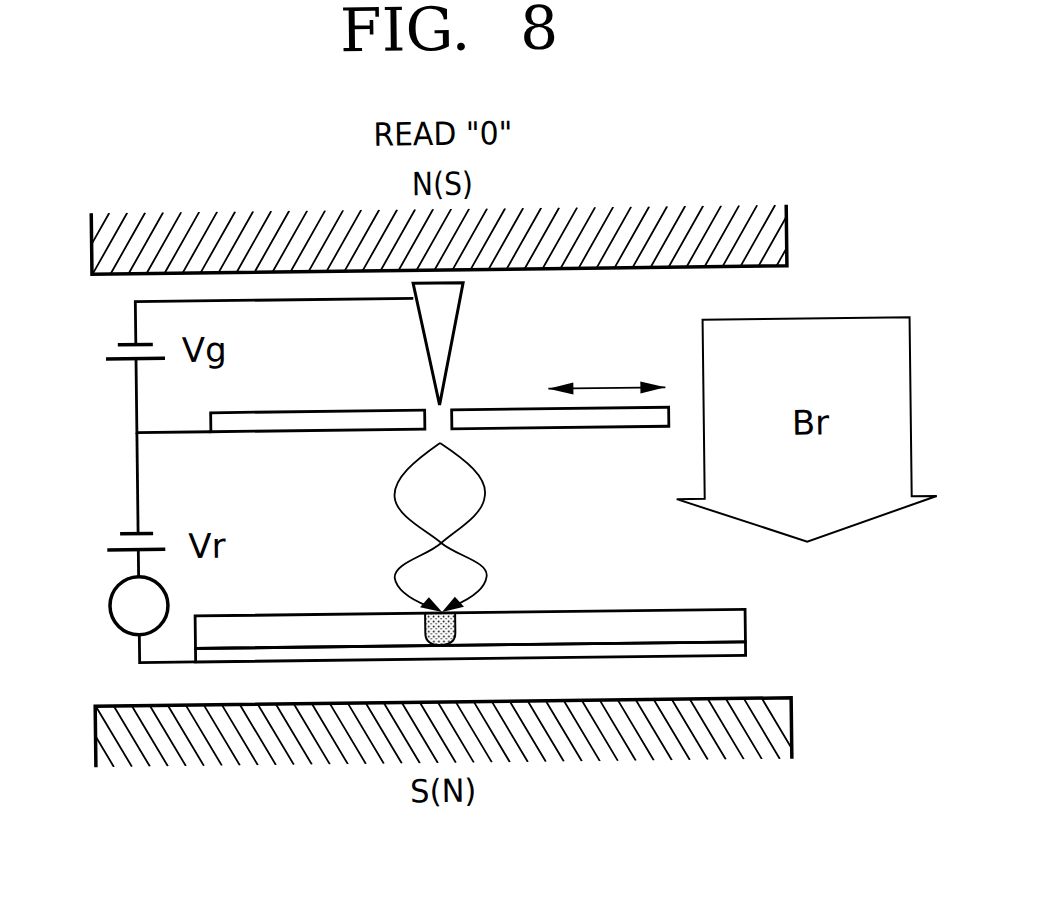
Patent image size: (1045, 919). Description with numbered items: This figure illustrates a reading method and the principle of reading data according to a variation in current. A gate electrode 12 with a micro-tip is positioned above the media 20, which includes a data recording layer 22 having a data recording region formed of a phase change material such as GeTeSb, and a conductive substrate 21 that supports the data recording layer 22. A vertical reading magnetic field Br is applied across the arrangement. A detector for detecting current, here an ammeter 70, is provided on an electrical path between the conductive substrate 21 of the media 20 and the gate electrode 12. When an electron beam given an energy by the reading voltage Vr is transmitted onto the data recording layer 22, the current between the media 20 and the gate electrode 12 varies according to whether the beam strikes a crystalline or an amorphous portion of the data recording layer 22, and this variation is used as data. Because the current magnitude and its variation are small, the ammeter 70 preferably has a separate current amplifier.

The gate electrode 12 is at (311, 410).
The media 20 is at (554, 630).
The substrate 21 is at (743, 653).
The data recording layer 22 is at (743, 625).
The ammeter 70 is at (108, 606).